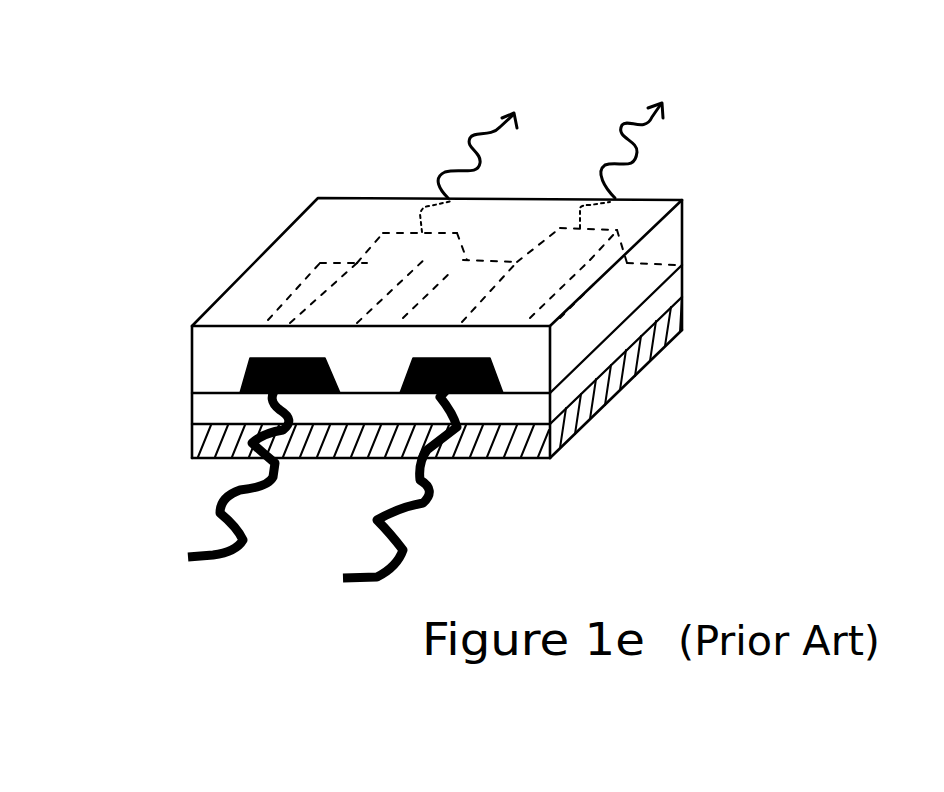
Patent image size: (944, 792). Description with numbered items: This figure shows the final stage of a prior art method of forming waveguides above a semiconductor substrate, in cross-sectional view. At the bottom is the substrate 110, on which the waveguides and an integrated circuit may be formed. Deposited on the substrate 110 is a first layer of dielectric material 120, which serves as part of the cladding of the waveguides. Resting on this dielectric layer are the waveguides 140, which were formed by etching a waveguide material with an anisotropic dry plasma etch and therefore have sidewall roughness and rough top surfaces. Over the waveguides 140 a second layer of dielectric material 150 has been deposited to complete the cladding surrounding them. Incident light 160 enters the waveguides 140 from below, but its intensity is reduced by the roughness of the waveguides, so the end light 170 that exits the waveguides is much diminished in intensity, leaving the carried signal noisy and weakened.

The substrate 110 is at (665, 325).
The first layer of dielectric material 120 is at (665, 287).
The waveguides 140 is at (240, 386).
The second layer of dielectric material 150 is at (665, 235).
The incident light 160 is at (330, 588).
The end light 170 is at (527, 100).